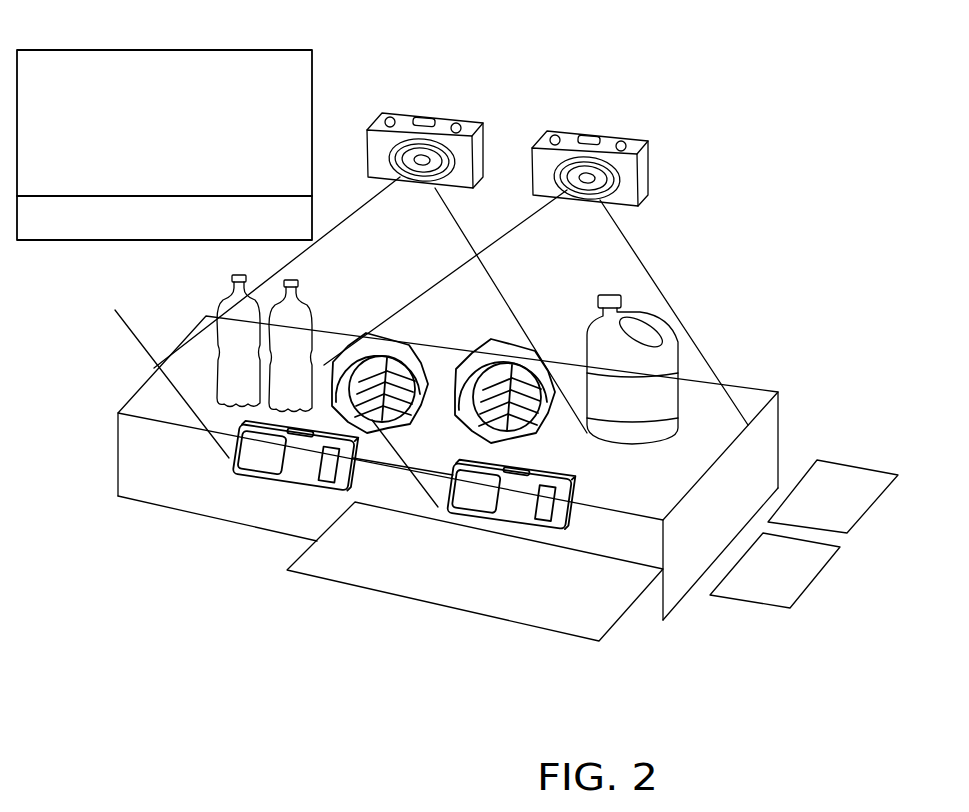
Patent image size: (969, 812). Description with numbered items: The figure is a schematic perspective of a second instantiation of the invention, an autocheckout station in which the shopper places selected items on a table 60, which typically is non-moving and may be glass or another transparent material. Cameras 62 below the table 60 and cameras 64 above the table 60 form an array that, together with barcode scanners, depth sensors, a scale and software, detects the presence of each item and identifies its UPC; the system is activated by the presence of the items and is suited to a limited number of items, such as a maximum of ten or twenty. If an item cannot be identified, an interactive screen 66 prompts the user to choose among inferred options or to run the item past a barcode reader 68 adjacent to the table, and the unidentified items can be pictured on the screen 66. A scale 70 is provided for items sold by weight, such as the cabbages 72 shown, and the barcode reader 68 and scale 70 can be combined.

The table 60 is at (678, 587).
The cameras below the table 62 is at (297, 480).
The cameras above the table 64 is at (450, 120).
The interactive screen 66 is at (312, 78).
The barcode reader 68 is at (818, 575).
The scale 70 is at (878, 498).
The cabbages 72 is at (357, 480).